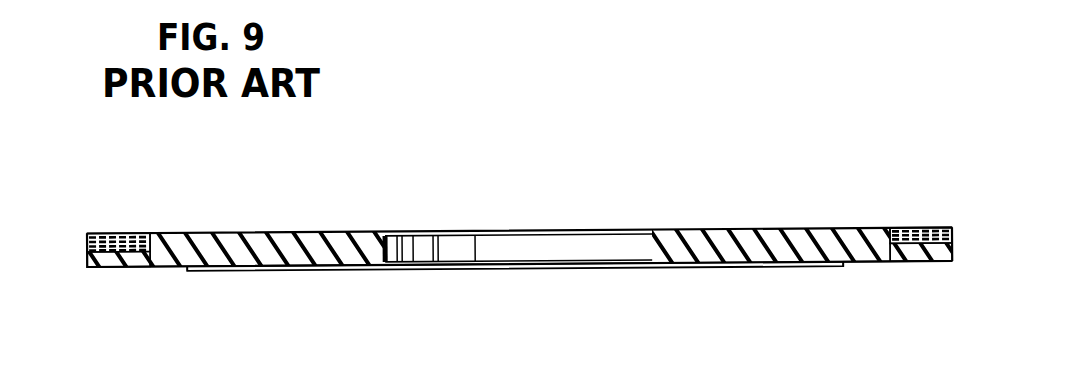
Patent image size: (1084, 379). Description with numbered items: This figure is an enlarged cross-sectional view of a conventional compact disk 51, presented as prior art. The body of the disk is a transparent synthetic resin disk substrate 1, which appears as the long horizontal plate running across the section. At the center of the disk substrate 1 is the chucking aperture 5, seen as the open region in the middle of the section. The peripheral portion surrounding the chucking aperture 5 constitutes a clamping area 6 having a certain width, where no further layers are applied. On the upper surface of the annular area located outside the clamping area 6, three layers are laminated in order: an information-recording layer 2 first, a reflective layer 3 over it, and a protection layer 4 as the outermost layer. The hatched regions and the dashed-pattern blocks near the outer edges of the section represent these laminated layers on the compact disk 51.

The compact disk 51 is at (689, 217).
The disk substrate 1 is at (105, 270).
The information-recording layer 2 is at (138, 270).
The reflective layer 3 is at (173, 268).
The protection layer 4 is at (134, 235).
The chucking aperture 5 is at (388, 270).
The clamping area 6 is at (305, 268).